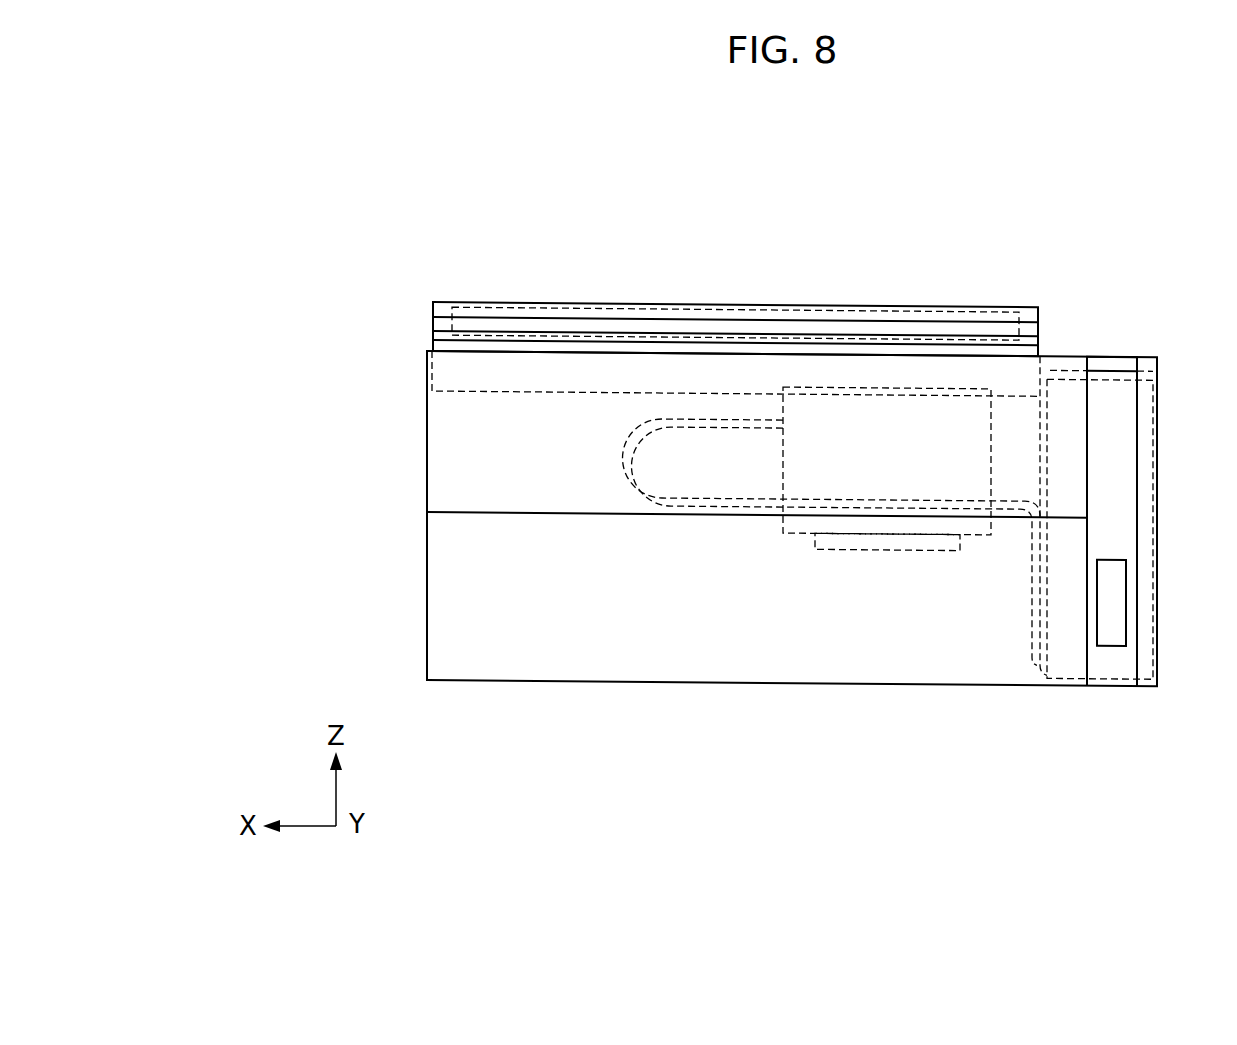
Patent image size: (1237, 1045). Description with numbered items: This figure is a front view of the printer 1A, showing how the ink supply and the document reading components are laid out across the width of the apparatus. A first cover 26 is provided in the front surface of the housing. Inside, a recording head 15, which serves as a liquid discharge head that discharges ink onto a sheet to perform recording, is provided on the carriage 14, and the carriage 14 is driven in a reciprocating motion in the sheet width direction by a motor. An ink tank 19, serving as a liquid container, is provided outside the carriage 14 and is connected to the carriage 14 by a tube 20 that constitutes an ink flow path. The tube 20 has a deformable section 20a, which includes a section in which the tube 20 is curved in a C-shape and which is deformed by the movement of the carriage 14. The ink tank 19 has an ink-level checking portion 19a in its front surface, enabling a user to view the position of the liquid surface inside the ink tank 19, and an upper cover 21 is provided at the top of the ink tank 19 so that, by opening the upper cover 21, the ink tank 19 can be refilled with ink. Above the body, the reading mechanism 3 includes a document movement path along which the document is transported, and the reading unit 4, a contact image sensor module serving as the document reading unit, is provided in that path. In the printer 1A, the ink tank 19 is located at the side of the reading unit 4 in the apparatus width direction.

The printer 1A is at (742, 222).
The reading mechanism 3 is at (831, 297).
The reading unit 4 is at (536, 300).
The carriage 14 is at (912, 387).
The recording head 15 is at (888, 545).
The ink tank 19 is at (1161, 428).
The ink-level checking portion 19a is at (1113, 612).
The tube 20 is at (1028, 562).
The deformable section 20a is at (658, 412).
The upper cover 21 is at (1120, 357).
The first cover 26 is at (440, 442).